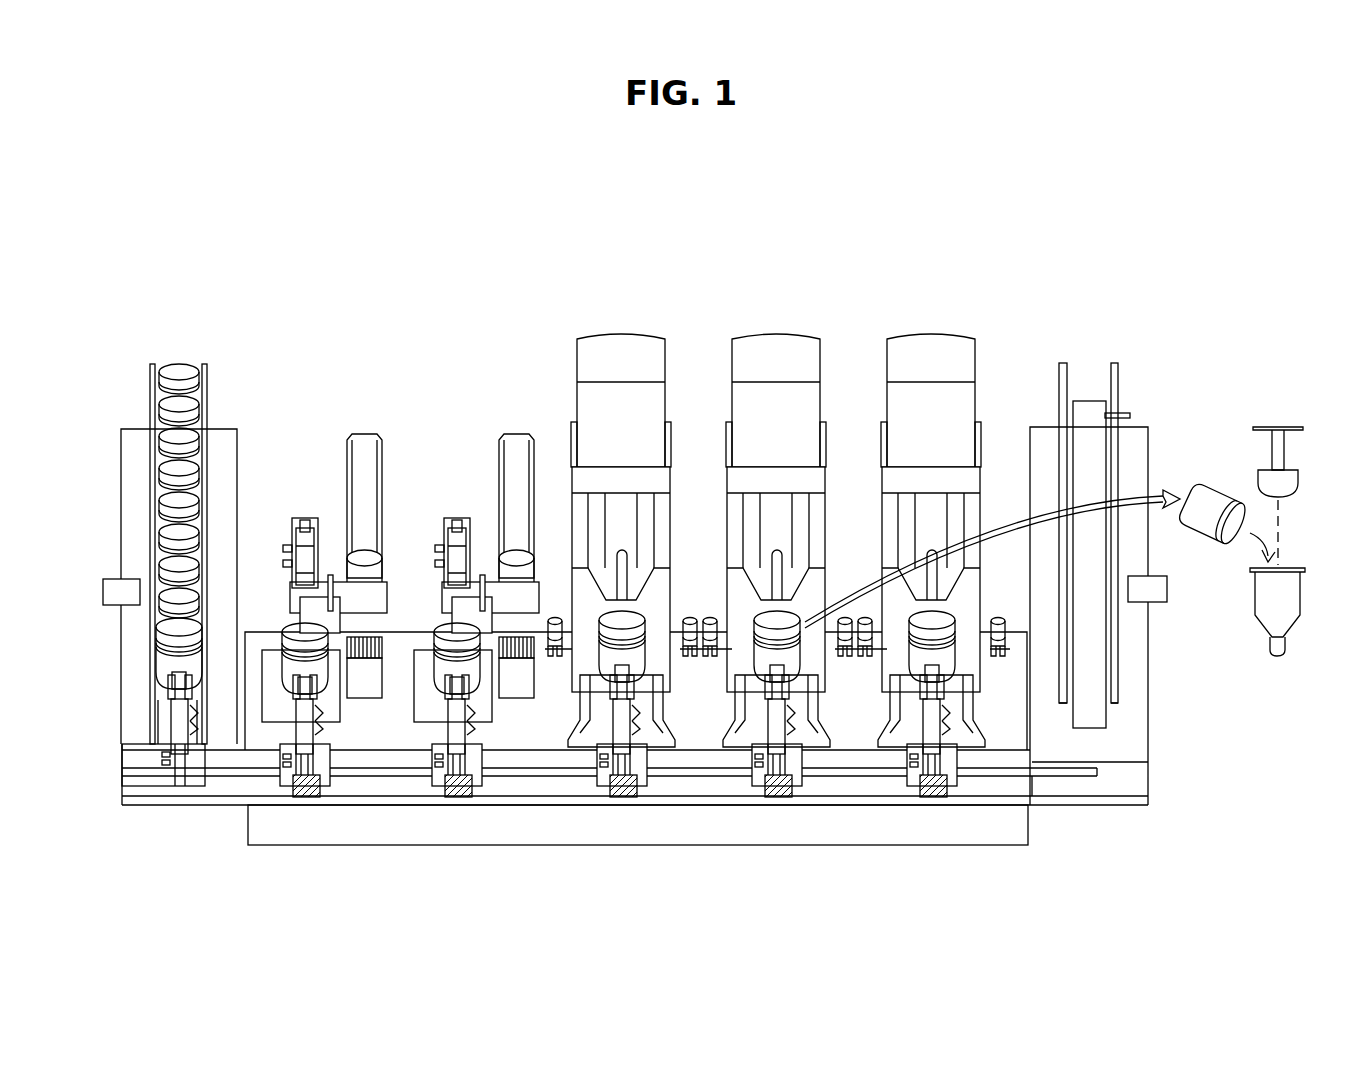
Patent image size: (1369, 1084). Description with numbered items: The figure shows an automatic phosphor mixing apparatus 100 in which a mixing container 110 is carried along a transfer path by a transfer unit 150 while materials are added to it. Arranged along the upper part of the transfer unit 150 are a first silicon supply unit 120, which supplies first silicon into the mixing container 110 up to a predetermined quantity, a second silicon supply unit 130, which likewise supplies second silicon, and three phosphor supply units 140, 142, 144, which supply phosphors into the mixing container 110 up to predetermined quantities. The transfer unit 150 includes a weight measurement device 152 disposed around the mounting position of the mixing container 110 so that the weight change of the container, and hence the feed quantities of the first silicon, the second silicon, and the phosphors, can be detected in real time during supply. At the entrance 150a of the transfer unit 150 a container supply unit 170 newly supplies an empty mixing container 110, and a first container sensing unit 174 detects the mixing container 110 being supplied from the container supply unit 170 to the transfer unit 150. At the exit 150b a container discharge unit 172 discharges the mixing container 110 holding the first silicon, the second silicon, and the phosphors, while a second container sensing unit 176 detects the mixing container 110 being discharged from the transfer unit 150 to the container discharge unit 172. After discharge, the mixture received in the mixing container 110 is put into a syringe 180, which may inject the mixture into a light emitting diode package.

The automatic phosphor mixing apparatus 100 is at (714, 176).
The mixing container 110 is at (180, 372).
The first silicon supply unit 120 is at (362, 430).
The second silicon supply unit 130 is at (514, 430).
The phosphor supply unit 140 is at (620, 333).
The phosphor supply unit 142 is at (775, 333).
The phosphor supply unit 144 is at (930, 333).
The transfer unit 150 is at (370, 766).
The entrance 150a is at (137, 760).
The exit 150b is at (1128, 775).
The weight measurement device 152 is at (298, 787).
The container supply unit 170 is at (150, 378).
The container discharge unit 172 is at (1118, 453).
The first container sensing unit 174 is at (92, 606).
The second container sensing unit 176 is at (1167, 591).
The syringe 180 is at (1300, 592).